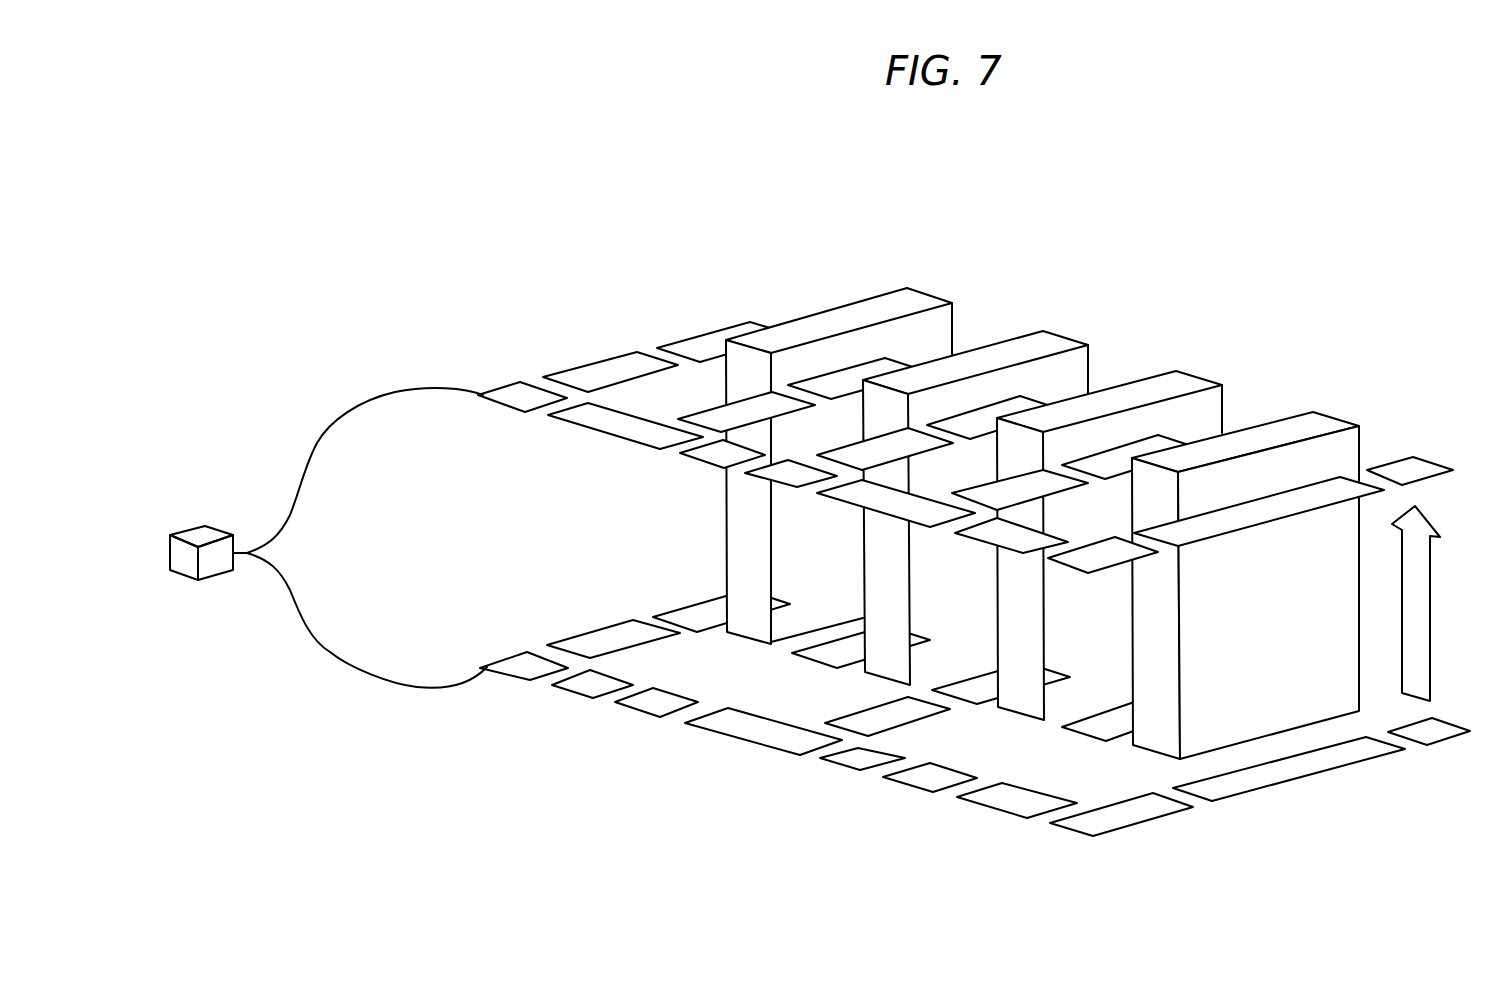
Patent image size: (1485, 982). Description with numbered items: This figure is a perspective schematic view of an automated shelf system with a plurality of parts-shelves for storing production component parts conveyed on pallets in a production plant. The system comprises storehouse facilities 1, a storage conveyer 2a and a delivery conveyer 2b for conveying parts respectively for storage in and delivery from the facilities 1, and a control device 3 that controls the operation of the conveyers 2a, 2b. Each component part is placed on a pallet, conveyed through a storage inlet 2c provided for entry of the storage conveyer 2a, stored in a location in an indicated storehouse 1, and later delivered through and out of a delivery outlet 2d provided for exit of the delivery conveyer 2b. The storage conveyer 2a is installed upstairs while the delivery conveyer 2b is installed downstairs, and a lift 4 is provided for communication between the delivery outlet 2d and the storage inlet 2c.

The storehouse facilities 1 is at (920, 301).
The storage conveyer 2a is at (1245, 536).
The delivery conveyer 2b is at (1307, 746).
The storage inlet 2c is at (1412, 467).
The delivery outlet 2d is at (1440, 733).
The control device 3 is at (205, 528).
The lift 4 is at (1427, 612).